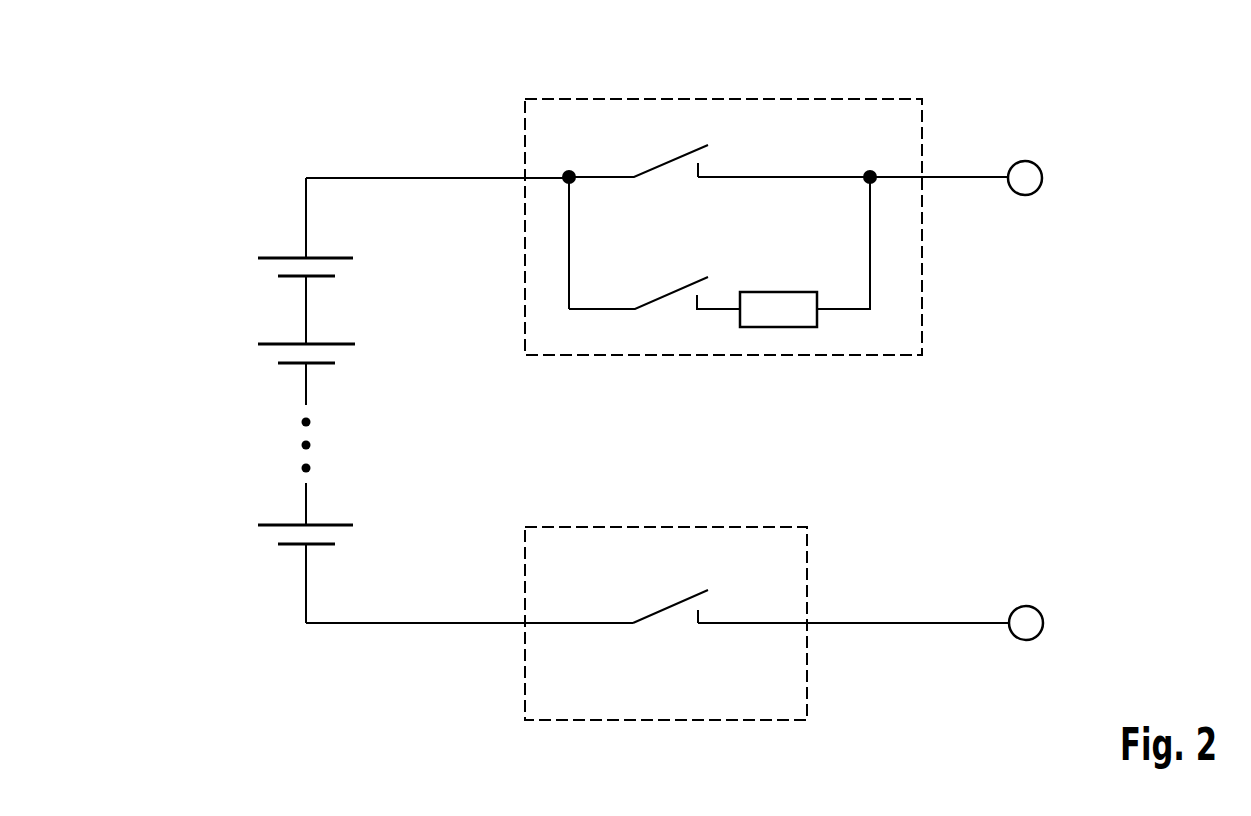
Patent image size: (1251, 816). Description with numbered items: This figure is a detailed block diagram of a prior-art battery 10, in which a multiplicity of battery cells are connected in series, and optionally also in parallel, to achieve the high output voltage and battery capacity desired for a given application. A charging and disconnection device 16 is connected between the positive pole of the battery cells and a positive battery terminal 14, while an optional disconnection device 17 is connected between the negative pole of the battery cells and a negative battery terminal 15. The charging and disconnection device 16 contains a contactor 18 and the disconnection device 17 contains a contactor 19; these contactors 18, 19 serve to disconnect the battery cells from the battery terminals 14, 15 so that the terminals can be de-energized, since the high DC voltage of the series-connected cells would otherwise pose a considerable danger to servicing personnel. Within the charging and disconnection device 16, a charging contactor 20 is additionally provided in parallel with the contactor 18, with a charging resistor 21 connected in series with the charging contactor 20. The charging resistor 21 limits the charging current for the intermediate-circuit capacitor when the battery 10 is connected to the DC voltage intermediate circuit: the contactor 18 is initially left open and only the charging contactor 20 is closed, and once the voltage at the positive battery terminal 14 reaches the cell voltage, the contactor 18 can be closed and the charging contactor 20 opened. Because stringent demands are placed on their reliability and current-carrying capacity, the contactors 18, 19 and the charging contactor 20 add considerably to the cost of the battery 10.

The battery 10 is at (224, 198).
The positive battery terminal 14 is at (1024, 161).
The negative battery terminal 15 is at (1024, 606).
The charging and disconnection device 16 is at (721, 99).
The disconnection device 17 is at (665, 527).
The contactor 18 is at (670, 163).
The contactor 19 is at (667, 610).
The charging contactor 20 is at (672, 295).
The charging resistor 21 is at (779, 328).